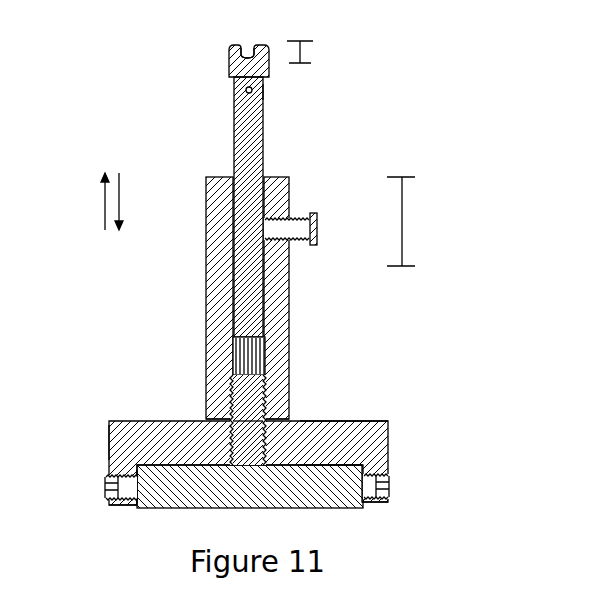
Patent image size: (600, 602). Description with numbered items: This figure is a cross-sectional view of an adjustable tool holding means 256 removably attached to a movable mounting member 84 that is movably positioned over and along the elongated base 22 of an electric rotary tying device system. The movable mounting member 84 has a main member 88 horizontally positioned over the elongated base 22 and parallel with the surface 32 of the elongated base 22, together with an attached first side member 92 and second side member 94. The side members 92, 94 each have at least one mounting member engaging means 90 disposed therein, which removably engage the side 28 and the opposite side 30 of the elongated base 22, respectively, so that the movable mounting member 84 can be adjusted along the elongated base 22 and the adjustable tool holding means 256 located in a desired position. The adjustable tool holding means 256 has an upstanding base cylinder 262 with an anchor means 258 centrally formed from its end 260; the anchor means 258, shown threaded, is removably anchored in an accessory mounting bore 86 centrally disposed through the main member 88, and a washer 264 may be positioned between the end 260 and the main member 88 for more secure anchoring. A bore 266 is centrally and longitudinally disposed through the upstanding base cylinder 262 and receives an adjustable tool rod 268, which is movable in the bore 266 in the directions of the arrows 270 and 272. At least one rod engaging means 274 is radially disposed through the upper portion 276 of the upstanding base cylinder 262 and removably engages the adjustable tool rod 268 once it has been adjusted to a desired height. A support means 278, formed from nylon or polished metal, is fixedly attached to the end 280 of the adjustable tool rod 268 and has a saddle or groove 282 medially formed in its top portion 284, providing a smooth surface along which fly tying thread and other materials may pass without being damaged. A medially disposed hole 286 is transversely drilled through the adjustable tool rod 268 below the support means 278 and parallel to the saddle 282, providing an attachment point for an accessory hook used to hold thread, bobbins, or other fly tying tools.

The elongated base 22 is at (110, 460).
The side of elongated base 28 is at (356, 488).
The opposite side of elongated base 30 is at (140, 490).
The surface of elongated base 32 is at (375, 421).
The movable mounting member 84 is at (108, 437).
The accessory mounting bore 86 is at (275, 417).
The main member 88 is at (325, 463).
The mounting member engaging means 90 is at (105, 477).
The first side member 92 is at (375, 510).
The second side member 94 is at (125, 505).
The adjustable tool holding means 256 is at (120, 73).
The anchor means 258 is at (272, 428).
The end of upstanding base cylinder 260 is at (206, 417).
The upstanding base cylinder 262 is at (290, 318).
The washer 264 is at (230, 435).
The bore 266 is at (250, 352).
The adjustable tool rod 268 is at (250, 150).
The arrow 270 is at (105, 200).
The arrow 272 is at (119, 200).
The rod engaging means 274 is at (318, 228).
The upper portion of upstanding base cylinder 276 is at (402, 225).
The support means 278 is at (230, 74).
The end of adjustable tool rod 280 is at (265, 80).
The saddle or groove 282 is at (243, 53).
The top portion 284 is at (305, 50).
The hole 286 is at (264, 93).